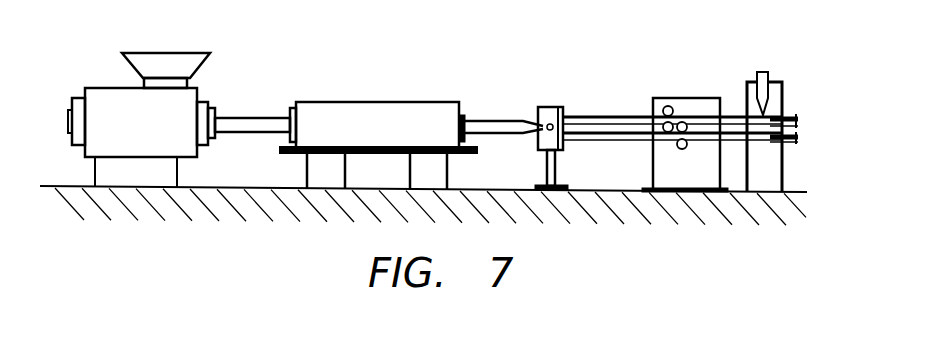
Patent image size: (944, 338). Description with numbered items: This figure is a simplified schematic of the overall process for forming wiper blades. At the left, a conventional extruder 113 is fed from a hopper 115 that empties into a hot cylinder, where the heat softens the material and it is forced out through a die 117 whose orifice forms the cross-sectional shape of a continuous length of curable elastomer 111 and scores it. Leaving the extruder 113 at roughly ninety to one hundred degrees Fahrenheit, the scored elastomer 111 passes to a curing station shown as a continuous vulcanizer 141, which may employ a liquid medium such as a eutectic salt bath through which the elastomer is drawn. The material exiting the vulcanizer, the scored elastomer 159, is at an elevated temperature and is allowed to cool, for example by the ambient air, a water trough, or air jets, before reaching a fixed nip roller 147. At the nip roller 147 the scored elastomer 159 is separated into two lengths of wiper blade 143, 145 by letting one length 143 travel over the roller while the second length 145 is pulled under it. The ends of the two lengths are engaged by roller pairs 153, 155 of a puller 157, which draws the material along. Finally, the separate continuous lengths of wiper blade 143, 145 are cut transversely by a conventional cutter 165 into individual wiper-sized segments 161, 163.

The curable elastomer 111 is at (232, 118).
The extruder 113 is at (100, 88).
The hopper 115 is at (190, 54).
The die 117 is at (217, 141).
The continuous vulcanizer 141 is at (432, 102).
The length of wiper blade 143 is at (622, 116).
The length of wiper blade 145 is at (620, 141).
The nip roller 147 is at (552, 107).
The roller pair 153 is at (670, 106).
The roller pair 155 is at (676, 146).
The puller 157 is at (690, 97).
The scored elastomer 159 is at (482, 120).
The wiper-sized segment 161 is at (792, 113).
The wiper-sized segment 163 is at (792, 143).
The cutter 165 is at (767, 72).